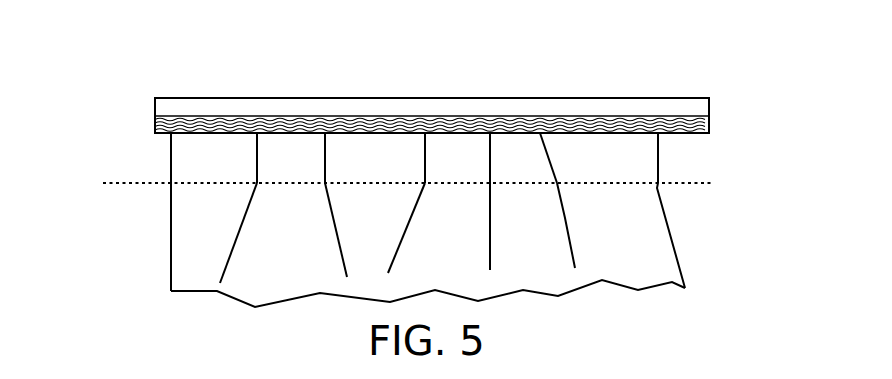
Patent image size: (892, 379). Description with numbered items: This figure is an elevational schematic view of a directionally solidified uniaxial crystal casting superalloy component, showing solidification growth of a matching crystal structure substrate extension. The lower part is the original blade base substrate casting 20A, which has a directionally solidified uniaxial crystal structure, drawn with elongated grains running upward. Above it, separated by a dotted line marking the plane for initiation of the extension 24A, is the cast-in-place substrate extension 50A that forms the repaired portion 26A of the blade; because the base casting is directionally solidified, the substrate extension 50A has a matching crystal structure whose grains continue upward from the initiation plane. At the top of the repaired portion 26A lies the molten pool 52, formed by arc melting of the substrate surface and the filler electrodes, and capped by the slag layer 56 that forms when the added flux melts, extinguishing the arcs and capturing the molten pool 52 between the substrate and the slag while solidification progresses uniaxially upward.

The slag layer 56 is at (242, 107).
The molten pool 52 is at (173, 125).
The substrate extension 50A is at (190, 147).
The repaired portion 26A is at (720, 93).
The blade base substrate casting 20A is at (720, 186).
The plane for initiation of extension 24A is at (122, 183).